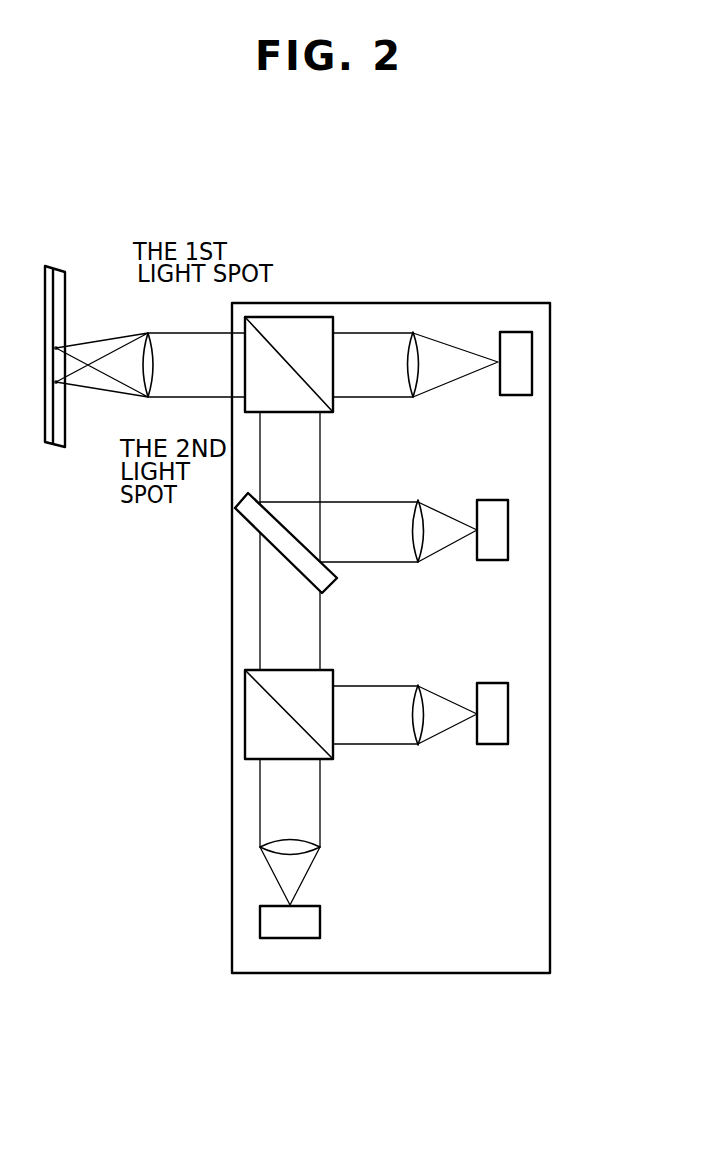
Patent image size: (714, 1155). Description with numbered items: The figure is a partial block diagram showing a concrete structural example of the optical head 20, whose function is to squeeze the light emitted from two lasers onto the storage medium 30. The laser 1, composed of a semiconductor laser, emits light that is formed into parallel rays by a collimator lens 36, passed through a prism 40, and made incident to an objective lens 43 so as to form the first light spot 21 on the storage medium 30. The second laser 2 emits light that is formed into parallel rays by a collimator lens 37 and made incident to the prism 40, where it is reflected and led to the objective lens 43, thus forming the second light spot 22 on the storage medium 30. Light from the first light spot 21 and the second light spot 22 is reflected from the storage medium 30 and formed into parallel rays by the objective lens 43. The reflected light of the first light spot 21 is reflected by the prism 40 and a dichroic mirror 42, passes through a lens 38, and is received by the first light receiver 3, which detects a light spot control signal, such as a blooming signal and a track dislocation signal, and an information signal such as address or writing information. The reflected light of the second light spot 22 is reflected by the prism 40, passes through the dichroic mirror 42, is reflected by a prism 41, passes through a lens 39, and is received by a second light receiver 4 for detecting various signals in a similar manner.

The laser 1 is at (514, 333).
The second laser 2 is at (320, 922).
The first light receiver 3 is at (487, 500).
The second light receiver 4 is at (488, 683).
The optical head 20 is at (551, 485).
The first light spot 21 is at (59, 348).
The second light spot 22 is at (58, 385).
The storage medium 30 is at (65, 259).
The collimator lens 36 is at (418, 350).
The collimator lens 37 is at (297, 842).
The lens 38 is at (412, 528).
The lens 39 is at (412, 710).
The prism 40 is at (319, 317).
The prism 41 is at (245, 724).
The dichroic mirror 42 is at (250, 528).
The objective lens 43 is at (152, 365).